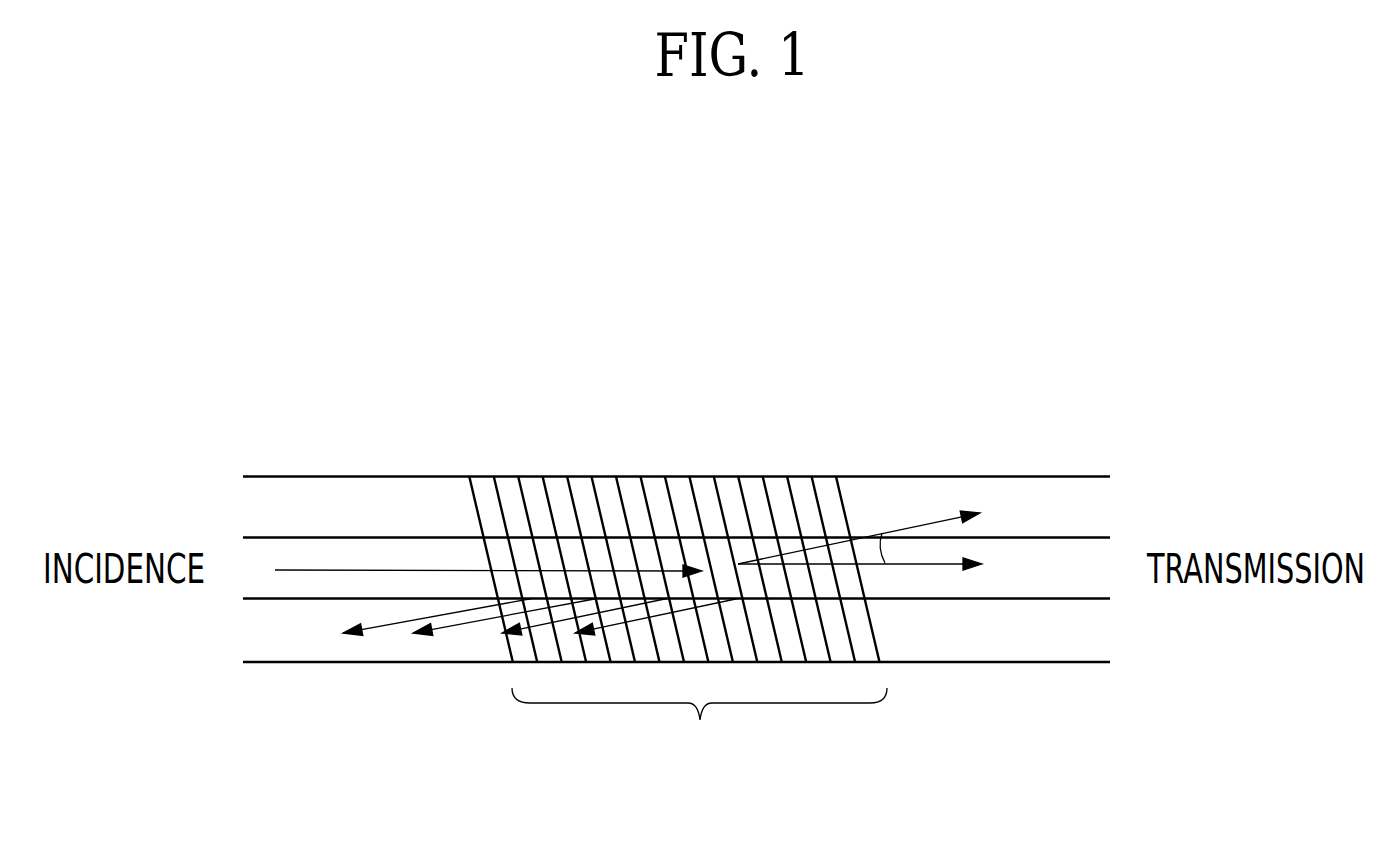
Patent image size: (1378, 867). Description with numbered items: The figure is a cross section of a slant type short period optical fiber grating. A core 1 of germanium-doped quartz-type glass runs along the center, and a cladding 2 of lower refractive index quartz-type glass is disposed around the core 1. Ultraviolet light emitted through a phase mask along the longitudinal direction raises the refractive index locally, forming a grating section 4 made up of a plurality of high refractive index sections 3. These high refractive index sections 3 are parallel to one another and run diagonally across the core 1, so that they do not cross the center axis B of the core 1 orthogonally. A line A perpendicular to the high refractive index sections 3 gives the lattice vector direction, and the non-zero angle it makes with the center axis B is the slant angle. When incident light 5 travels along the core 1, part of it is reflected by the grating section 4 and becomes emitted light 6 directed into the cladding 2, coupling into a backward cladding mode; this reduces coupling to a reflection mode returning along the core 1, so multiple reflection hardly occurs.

The core 1 is at (1040, 588).
The cladding 2 is at (1083, 648).
The high refractive index sections 3 is at (469, 476).
The grating section 4 is at (699, 729).
The incident light 5 is at (352, 570).
The emitted light 6 is at (397, 627).
The line crossing the high refractive index sections orthogonally A is at (930, 518).
The center axis of the core B is at (912, 565).